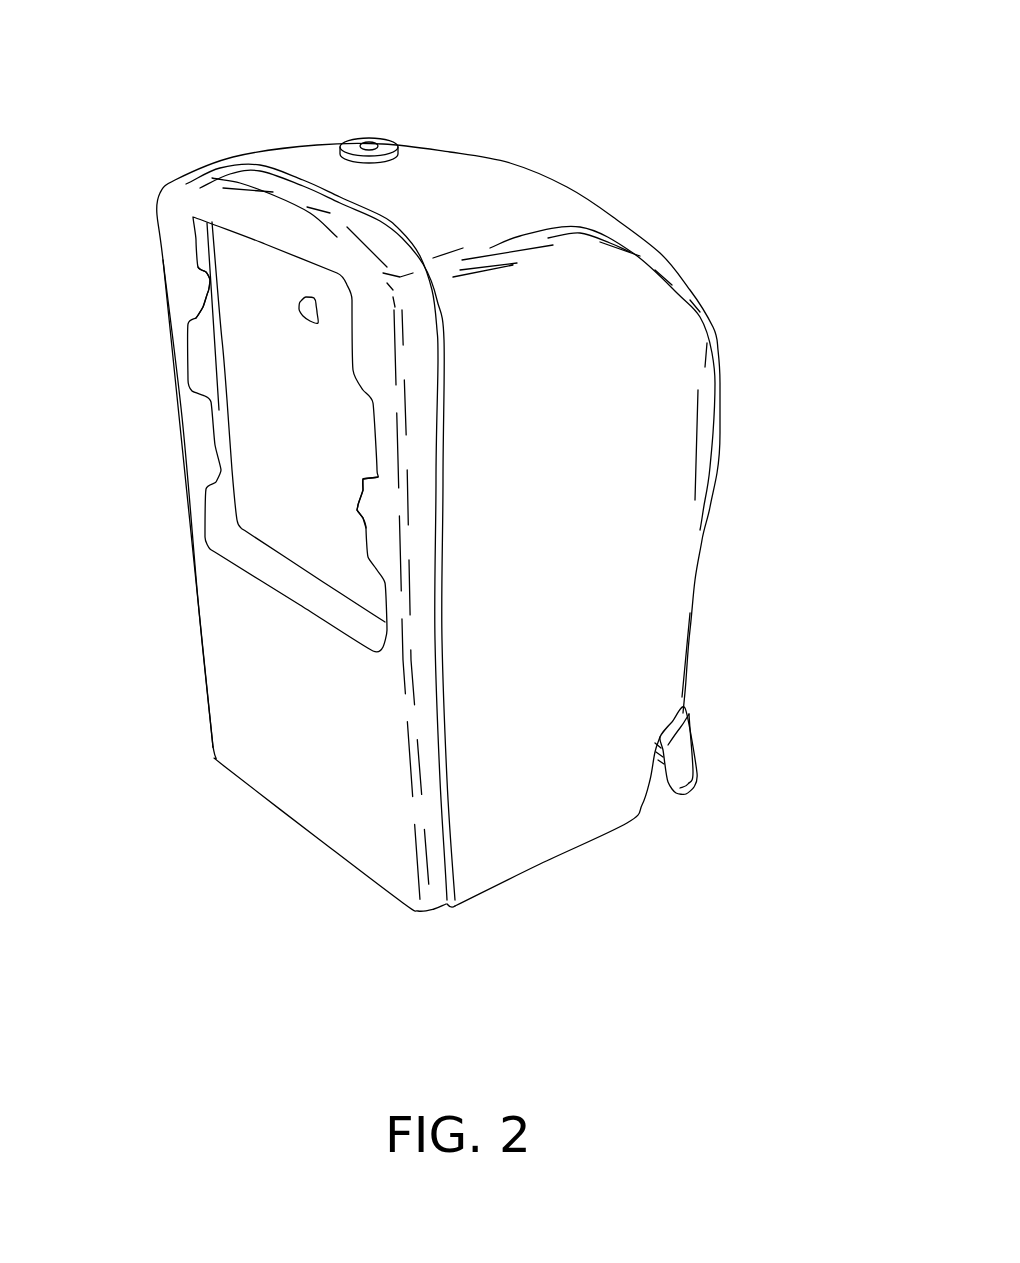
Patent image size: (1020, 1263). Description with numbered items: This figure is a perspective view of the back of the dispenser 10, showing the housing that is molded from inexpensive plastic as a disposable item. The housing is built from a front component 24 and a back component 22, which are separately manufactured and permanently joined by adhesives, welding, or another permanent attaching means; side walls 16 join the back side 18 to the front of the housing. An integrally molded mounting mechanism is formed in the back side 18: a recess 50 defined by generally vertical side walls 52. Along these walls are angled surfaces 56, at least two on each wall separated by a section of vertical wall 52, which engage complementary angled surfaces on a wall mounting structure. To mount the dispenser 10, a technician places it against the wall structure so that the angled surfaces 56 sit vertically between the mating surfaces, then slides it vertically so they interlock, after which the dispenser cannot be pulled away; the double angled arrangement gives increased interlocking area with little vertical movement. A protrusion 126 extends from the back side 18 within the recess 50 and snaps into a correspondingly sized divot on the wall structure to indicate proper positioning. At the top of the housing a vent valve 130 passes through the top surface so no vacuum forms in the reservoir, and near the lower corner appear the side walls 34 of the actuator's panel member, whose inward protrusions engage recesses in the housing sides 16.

The dispenser 10 is at (603, 50).
The side walls 16 is at (672, 563).
The back side 18 is at (228, 682).
The back component 22 is at (198, 602).
The front component 24 is at (709, 310).
The side walls 34 is at (680, 773).
The recess 50 is at (250, 366).
The vertical side walls 52 is at (220, 524).
The angled surfaces 56 is at (207, 285).
The protrusion 126 is at (318, 316).
The vent valve 130 is at (382, 143).